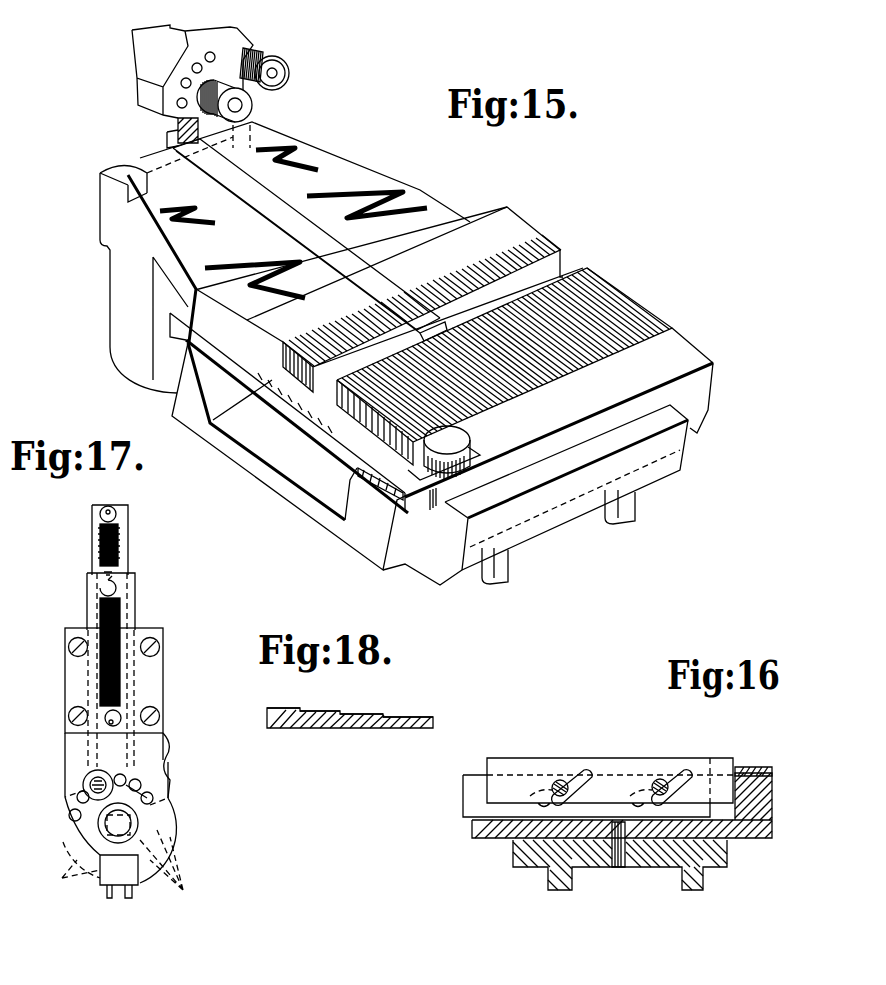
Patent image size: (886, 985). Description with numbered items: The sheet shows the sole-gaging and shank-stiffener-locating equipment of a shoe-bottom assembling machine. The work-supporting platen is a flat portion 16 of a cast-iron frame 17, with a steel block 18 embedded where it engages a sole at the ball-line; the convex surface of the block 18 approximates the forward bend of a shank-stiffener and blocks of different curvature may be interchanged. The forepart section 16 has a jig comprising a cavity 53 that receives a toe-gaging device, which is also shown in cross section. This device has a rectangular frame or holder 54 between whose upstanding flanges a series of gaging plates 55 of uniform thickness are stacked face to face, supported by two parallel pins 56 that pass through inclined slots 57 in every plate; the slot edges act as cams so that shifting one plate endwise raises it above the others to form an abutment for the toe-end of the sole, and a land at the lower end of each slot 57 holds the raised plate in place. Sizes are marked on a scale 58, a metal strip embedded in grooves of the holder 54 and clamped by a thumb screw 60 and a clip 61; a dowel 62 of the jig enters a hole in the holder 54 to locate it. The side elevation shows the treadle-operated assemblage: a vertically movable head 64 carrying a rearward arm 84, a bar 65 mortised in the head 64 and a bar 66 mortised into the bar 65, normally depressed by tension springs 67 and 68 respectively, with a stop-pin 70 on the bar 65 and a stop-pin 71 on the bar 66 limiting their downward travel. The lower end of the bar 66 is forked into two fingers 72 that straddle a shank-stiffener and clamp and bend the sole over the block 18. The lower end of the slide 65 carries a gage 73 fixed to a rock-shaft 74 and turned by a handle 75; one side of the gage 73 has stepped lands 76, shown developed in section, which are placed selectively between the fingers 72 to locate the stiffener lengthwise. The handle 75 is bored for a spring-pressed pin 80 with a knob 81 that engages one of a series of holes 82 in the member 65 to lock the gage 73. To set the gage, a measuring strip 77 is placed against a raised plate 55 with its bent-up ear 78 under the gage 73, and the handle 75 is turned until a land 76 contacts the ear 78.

In FIG. 15, the flat portion of frame / forepart section of platen 16 is at (347, 165).
In FIG. 15, the cast-iron frame 17 is at (110, 318).
In FIG. 15, the steel block 18 is at (140, 157).
In FIG. 15, the cavity 53 is at (670, 477).
In FIG. 16, the cavity 53 is at (670, 860).
In FIG. 15, the rectangular frame / holder 54 is at (695, 345).
In FIG. 16, the rectangular frame / holder 54 is at (757, 840).
In FIG. 15, the gaging plates 55 is at (603, 277).
In FIG. 16, the gaging plates 55 is at (613, 758).
In FIG. 16, the pins 56 is at (660, 779).
In FIG. 16, the inclined slots 57 is at (573, 768).
In FIG. 15, the scale 58 is at (340, 420).
In FIG. 16, the scale 58 is at (743, 770).
In FIG. 15, the thumb screw 60 is at (470, 433).
In FIG. 15, the clip 61 is at (475, 453).
In FIG. 16, the dowel 62 is at (618, 857).
In FIG. 17, the guide-block or head 64 is at (75, 743).
In FIG. 15, the bar (slide) 65 is at (142, 35).
In FIG. 17, the bar (slide) 65 is at (88, 693).
In FIG. 17, the bar 66 is at (93, 547).
In FIG. 17, the tension spring 67 is at (103, 678).
In FIG. 17, the tension spring 68 is at (118, 537).
In FIG. 17, the stop-pin 70 is at (98, 622).
In FIG. 17, the stop-pin 71 is at (107, 578).
In FIG. 17, the fingers 72 is at (129, 898).
In FIG. 17, the gage 73 is at (178, 830).
In FIG. 18, the gage 73 is at (347, 730).
In FIG. 15, the pin or rock-shaft 74 is at (239, 105).
In FIG. 17, the pin or rock-shaft 74 is at (108, 826).
In FIG. 15, the crank or handle 75 is at (262, 52).
In FIG. 17, the crank or handle 75 is at (153, 797).
In FIG. 17, the gaging surfaces or lands 76 is at (121, 845).
In FIG. 18, the gaging surfaces or lands 76 is at (415, 717).
In FIG. 15, the measuring strip or templet 77 is at (277, 222).
In FIG. 15, the ear or abutment 78 is at (170, 138).
In FIG. 15, the spring-pressed pin 80 is at (278, 73).
In FIG. 17, the spring-pressed pin 80 is at (98, 781).
In FIG. 15, the knob 81 is at (280, 85).
In FIG. 17, the knob 81 is at (83, 775).
In FIG. 15, the holes 82 is at (205, 60).
In FIG. 17, the holes 82 is at (77, 797).
In FIG. 17, the arm 84 is at (173, 742).